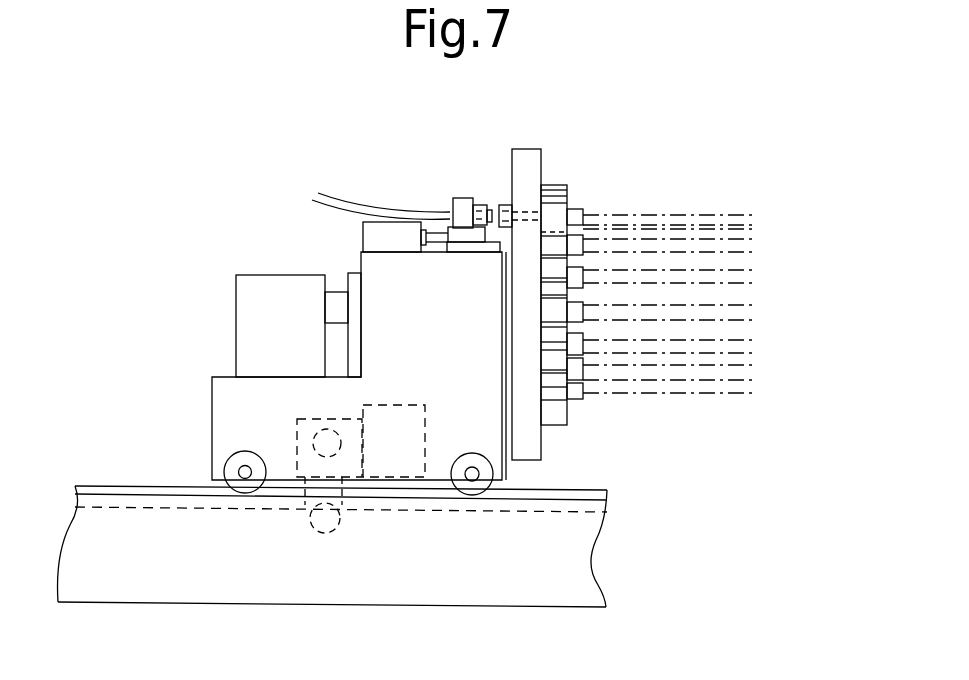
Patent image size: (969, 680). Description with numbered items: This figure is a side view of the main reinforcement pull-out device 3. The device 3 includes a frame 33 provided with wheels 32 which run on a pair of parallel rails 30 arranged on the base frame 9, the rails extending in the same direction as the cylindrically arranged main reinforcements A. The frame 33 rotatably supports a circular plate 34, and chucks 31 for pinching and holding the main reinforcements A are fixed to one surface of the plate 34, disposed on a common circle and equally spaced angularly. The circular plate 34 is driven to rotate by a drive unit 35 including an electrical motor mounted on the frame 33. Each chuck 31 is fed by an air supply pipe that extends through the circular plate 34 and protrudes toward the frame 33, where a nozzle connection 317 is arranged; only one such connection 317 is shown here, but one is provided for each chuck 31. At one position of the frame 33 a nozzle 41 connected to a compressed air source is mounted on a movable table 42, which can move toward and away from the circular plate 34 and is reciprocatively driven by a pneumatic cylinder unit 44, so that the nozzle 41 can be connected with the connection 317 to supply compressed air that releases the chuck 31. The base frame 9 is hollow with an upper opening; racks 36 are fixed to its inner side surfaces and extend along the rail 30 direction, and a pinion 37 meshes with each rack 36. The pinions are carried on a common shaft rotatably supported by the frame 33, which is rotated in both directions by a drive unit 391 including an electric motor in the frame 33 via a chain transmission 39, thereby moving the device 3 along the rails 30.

The main reinforcement pull-out device 3 is at (258, 221).
The base frame 9 is at (580, 583).
The rails 30 is at (560, 488).
The chucks 31 is at (552, 186).
The wheels 32 is at (241, 483).
The frame 33 is at (214, 436).
The circular plate 34 is at (528, 150).
The drive unit 35 is at (240, 321).
The racks 36 is at (555, 515).
The pinion 37 is at (328, 537).
The chain transmission 39 is at (342, 465).
The drive unit 391 is at (414, 398).
The nozzle 41 is at (490, 205).
The movable table 42 is at (478, 252).
The pneumatic cylinder unit 44 is at (397, 252).
The nozzle connection 317 is at (508, 205).
The main reinforcements A is at (733, 237).